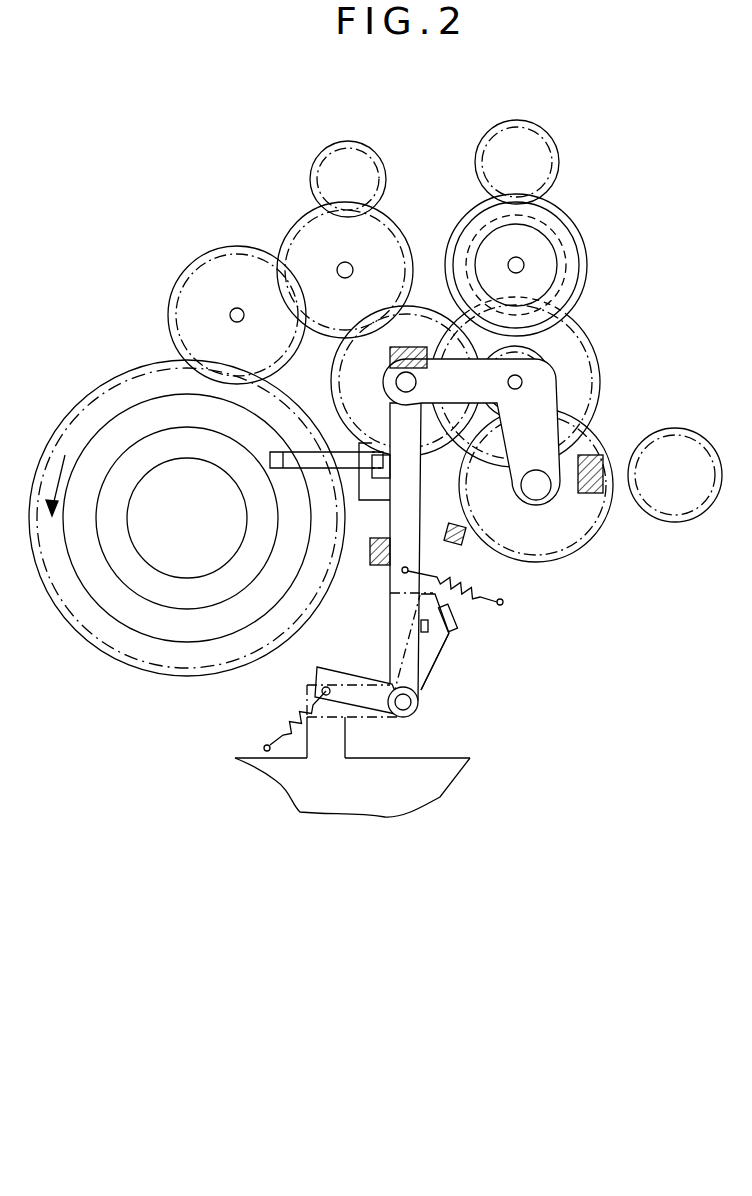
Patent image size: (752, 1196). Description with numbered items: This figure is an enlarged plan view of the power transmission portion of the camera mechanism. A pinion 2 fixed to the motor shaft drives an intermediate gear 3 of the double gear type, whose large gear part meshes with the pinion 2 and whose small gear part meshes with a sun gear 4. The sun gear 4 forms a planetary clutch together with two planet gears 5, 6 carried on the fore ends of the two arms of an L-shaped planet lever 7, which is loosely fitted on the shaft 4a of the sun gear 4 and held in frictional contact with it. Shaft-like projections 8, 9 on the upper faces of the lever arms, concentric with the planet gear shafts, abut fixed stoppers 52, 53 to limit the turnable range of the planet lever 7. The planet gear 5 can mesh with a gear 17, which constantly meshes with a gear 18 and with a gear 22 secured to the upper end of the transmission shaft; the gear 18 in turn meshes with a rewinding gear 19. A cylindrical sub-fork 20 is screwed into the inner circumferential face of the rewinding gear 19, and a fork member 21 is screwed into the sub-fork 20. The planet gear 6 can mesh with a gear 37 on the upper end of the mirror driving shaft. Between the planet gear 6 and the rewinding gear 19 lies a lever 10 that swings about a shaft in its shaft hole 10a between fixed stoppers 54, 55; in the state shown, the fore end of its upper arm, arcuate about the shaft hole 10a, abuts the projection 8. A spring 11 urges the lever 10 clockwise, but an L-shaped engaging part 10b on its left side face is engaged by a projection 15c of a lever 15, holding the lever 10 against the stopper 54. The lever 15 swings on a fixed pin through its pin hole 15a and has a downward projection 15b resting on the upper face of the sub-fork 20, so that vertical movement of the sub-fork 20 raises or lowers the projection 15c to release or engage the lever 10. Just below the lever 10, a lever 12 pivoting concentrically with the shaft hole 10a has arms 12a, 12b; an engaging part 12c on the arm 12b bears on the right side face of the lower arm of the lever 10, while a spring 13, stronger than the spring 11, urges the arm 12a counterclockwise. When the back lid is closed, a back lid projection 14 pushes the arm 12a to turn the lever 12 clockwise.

The pinion 2 is at (500, 163).
The intermediate gear 3 is at (535, 259).
The sun gear 4 is at (563, 357).
The shaft of the sun gear 4a is at (523, 383).
The planet gear 5 is at (337, 367).
The planet gear 6 is at (573, 527).
The planet lever 7 is at (528, 450).
The shaft-like projection 8 is at (390, 380).
The shaft-like projection 9 is at (536, 493).
The lever 10 is at (397, 567).
The shaft hole 10a is at (410, 718).
The engaging part 10b is at (360, 490).
The spring 11 is at (483, 600).
The lever 12 is at (357, 720).
The arm 12a is at (315, 673).
The arm 12b is at (433, 688).
The engaging part 12c is at (453, 622).
The spring 13 is at (296, 735).
The back lid projection 14 is at (335, 758).
The lever 15 is at (293, 460).
The pin hole 15a is at (355, 447).
The downward projection 15b is at (270, 462).
The downward projection 15c is at (385, 463).
The gear 17 is at (313, 253).
The gear 18 is at (195, 303).
The rewinding gear 19 is at (139, 387).
The sub-fork 20 is at (110, 445).
The fork member 21 is at (137, 580).
The gear 22 is at (337, 178).
The gear 37 is at (665, 455).
The fixed stopper 52 is at (422, 347).
The fixed stopper 53 is at (593, 495).
The fixed stopper 54 is at (372, 562).
The fixed stopper 55 is at (467, 547).